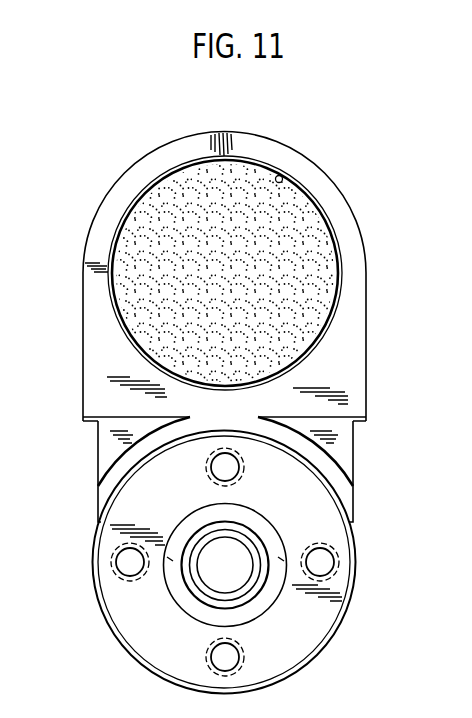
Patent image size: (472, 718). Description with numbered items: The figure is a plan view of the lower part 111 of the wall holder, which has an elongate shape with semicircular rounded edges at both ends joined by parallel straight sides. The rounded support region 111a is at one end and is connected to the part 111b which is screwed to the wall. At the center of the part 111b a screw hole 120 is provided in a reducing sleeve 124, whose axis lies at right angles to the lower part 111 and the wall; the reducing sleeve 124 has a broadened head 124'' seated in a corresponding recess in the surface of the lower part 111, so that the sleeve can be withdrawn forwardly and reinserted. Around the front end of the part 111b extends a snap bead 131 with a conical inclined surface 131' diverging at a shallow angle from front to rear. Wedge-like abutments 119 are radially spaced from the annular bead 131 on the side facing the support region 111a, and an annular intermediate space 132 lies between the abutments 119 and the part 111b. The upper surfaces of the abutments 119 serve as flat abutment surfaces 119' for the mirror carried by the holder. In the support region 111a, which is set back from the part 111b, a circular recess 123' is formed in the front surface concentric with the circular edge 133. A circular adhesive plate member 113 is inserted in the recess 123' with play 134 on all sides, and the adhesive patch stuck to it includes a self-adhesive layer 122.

The lower part 111 is at (375, 314).
The support region 111a is at (102, 227).
The part screwed to the wall 111b is at (320, 641).
The adhesive plate member 113 is at (342, 245).
The abutments 119 is at (229, 471).
The abutment surfaces 119' is at (223, 397).
The screw hole 120 is at (208, 543).
The self-adhesive layer 122 is at (316, 346).
The circular recess 123' is at (307, 149).
The reducing sleeve 124 is at (177, 575).
The broadened head 124'' is at (201, 615).
The snap bead 131 is at (253, 562).
The conical inclined surface 131' is at (341, 609).
The annular intermediate space 132 is at (108, 480).
The circular edge 133 is at (176, 136).
The play 134 is at (316, 205).